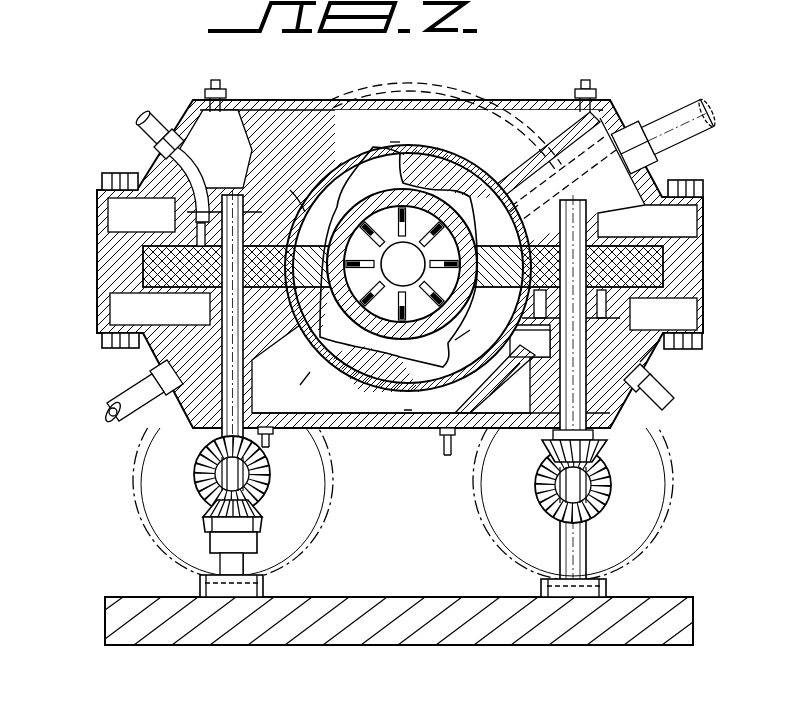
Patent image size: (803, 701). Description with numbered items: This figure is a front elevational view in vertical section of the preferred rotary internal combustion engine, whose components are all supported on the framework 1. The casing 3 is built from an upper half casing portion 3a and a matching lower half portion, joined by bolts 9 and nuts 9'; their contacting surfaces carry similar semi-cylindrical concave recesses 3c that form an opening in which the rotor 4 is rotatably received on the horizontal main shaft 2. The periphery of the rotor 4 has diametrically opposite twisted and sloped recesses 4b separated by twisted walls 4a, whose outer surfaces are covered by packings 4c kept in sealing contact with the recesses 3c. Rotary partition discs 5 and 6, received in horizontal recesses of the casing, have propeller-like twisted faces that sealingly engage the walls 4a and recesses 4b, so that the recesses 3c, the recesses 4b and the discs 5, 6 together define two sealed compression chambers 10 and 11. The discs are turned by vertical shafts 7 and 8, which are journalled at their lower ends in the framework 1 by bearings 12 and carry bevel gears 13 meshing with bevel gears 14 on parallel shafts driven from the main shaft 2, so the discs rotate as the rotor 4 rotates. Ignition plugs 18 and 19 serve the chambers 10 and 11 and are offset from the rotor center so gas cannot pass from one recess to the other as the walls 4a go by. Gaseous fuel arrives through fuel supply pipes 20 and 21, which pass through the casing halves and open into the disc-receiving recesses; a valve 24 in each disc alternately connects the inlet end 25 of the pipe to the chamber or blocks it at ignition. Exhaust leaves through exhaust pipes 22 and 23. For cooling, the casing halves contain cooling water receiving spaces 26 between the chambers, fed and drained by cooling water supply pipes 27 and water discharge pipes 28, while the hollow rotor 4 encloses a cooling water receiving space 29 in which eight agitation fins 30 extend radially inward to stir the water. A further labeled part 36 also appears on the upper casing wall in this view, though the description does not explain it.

The framework 1 is at (677, 623).
The main shaft 2 is at (414, 270).
The casing 3 is at (95, 312).
The upper half casing portion 3a is at (656, 362).
The semi-cylindrical concave recesses 3c is at (418, 450).
The rotor 4 is at (443, 205).
The twisted walls 4a is at (420, 412).
The twisted and sloped recesses 4b is at (474, 318).
The packings 4c is at (395, 140).
The rotary partition disc 5 is at (143, 258).
The rotary partition disc 6 is at (646, 268).
The vertical shaft 7 is at (228, 432).
The vertical shaft 8 is at (566, 416).
The bolts 9 is at (422, 162).
The nuts 9' is at (406, 369).
The compression chamber 10 is at (513, 208).
The compression chamber 11 is at (308, 212).
The bearing 12 is at (260, 590).
The bevel gears 13 is at (202, 515).
The bevel gears 14 is at (270, 497).
The ignition plug 18 is at (318, 100).
The ignition plug 19 is at (508, 440).
The fuel supply pipe 20 is at (150, 122).
The fuel supply pipe 21 is at (660, 394).
The exhaust pipe 22 is at (686, 100).
The exhaust pipe 23 is at (128, 418).
The valve 24 is at (270, 175).
The inlet end 25 is at (198, 205).
The cooling water receiving spaces 26 is at (488, 130).
The cooling water supply pipes 27 is at (449, 447).
The water discharge pipes 28 is at (598, 90).
The cooling water receiving space 29 is at (366, 305).
The agitation fins 30 is at (468, 245).
The housing wall 36 is at (530, 100).